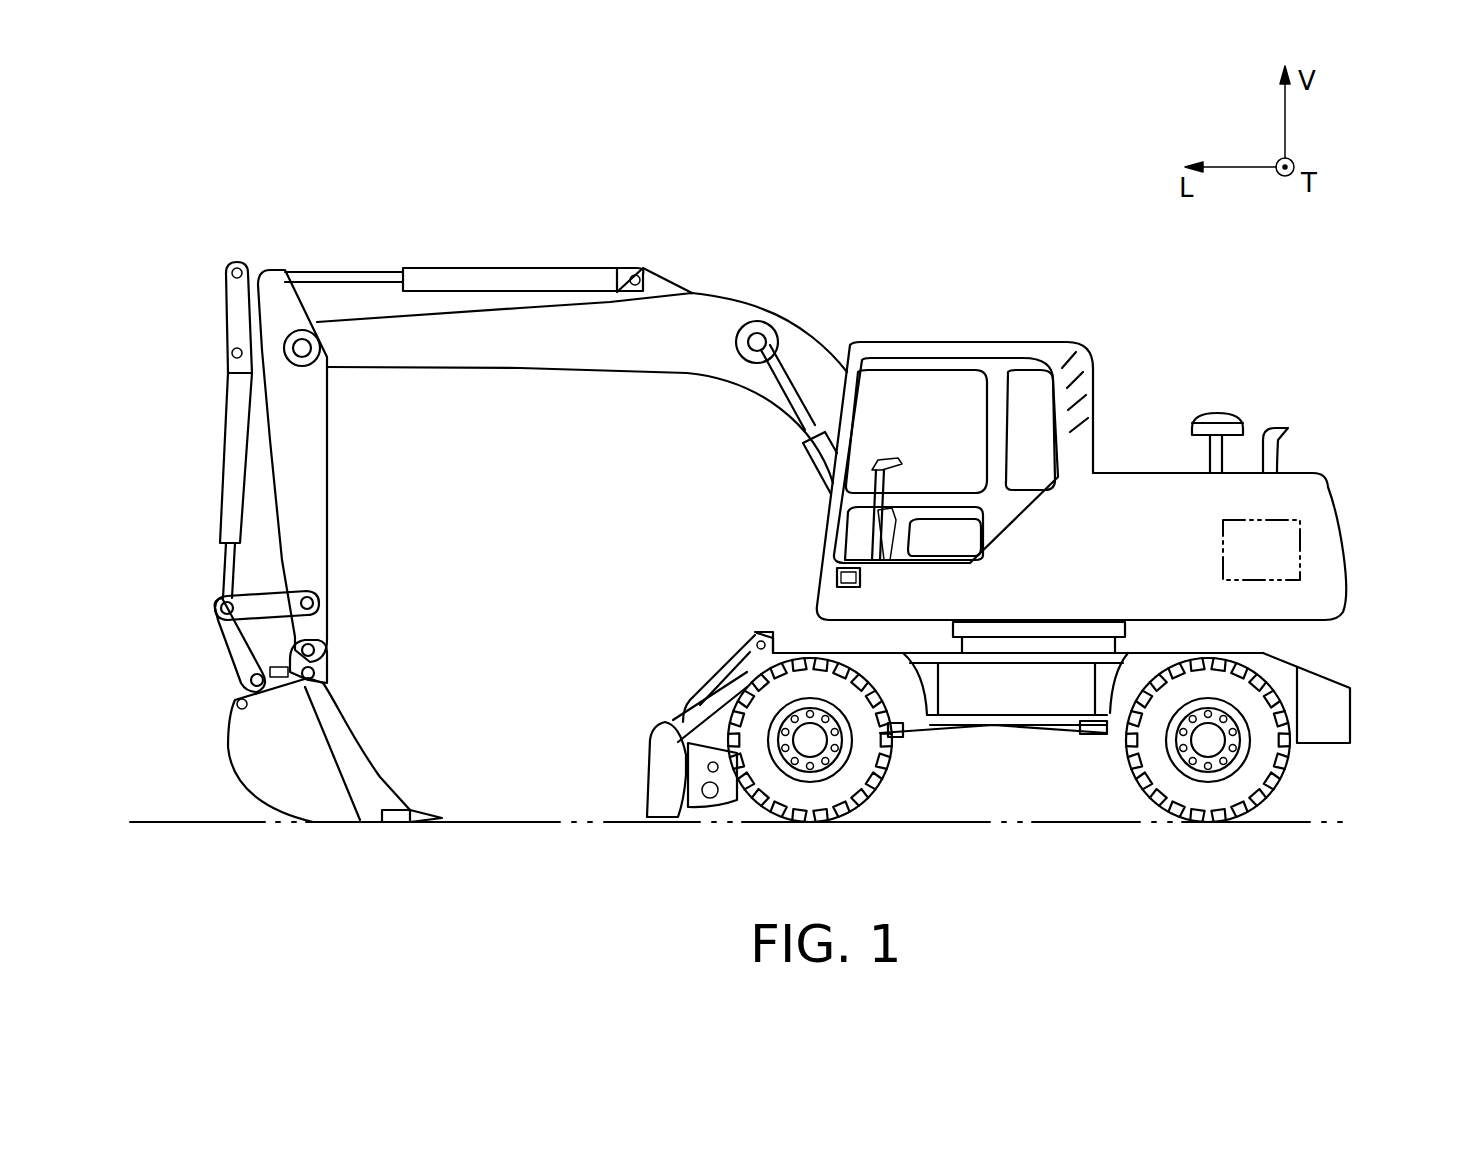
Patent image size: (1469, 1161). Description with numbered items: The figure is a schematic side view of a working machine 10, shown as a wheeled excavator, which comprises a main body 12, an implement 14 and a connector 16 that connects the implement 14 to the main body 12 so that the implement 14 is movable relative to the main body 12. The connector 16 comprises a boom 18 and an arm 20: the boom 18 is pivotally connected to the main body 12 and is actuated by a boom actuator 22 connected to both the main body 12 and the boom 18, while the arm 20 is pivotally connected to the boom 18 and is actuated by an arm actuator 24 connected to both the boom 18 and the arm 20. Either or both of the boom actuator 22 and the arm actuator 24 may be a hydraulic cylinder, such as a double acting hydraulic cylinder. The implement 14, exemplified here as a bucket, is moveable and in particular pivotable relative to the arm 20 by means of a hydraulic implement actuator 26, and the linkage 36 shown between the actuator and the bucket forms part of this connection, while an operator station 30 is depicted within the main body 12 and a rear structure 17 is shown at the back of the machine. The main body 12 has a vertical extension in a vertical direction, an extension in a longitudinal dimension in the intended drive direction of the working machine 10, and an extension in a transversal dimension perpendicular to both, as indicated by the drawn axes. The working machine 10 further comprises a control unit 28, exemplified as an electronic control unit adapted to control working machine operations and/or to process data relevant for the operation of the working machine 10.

The working machine 10 is at (1018, 182).
The main body 12 is at (1330, 322).
The implement 14 is at (237, 800).
The connector 16 is at (207, 150).
The rear counterweight / outrigger 17 is at (1380, 673).
The boom 18 is at (510, 218).
The arm 20 is at (182, 410).
The boom actuator 22 is at (803, 388).
The arm actuator 24 is at (440, 277).
The implement actuator 26 is at (222, 493).
The control unit 28 is at (1290, 520).
The operator station 30 is at (910, 523).
The bucket linkage 36 is at (272, 656).